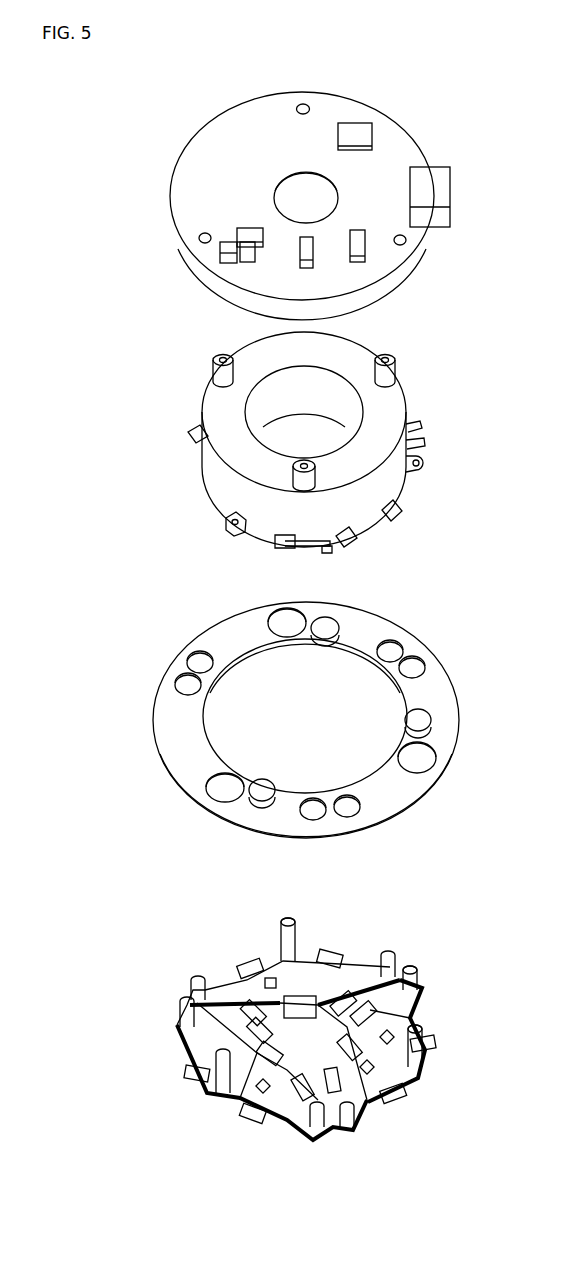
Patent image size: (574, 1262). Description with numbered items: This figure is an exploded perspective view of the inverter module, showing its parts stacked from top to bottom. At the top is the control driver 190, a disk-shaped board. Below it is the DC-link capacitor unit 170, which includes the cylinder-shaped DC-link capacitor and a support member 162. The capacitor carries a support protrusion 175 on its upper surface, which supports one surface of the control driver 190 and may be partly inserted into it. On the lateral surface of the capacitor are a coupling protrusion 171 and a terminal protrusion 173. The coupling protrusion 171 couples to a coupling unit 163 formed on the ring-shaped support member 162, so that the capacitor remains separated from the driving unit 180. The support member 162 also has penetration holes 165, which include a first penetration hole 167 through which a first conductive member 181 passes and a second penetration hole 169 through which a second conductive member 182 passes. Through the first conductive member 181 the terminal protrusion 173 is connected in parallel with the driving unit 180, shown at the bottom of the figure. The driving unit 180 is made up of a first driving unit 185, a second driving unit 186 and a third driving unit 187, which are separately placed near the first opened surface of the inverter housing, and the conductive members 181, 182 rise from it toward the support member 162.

The control driver 190 is at (175, 142).
The DC-link capacitor unit 170 is at (106, 360).
The support protrusion 175 is at (386, 356).
The terminal protrusion 173 is at (428, 442).
The coupling protrusion 171 is at (224, 524).
The support member 162 is at (169, 635).
The coupling unit 163 is at (257, 797).
The penetration hole 165 is at (452, 892).
The first penetration hole 167 is at (350, 812).
The second penetration hole 169 is at (420, 757).
The driving unit 180 is at (170, 946).
The third driving unit 187 is at (273, 932).
The first conductive member 181 is at (419, 981).
The second conductive member 182 is at (433, 1031).
The first driving unit 185 is at (441, 1069).
The second driving unit 186 is at (200, 1101).